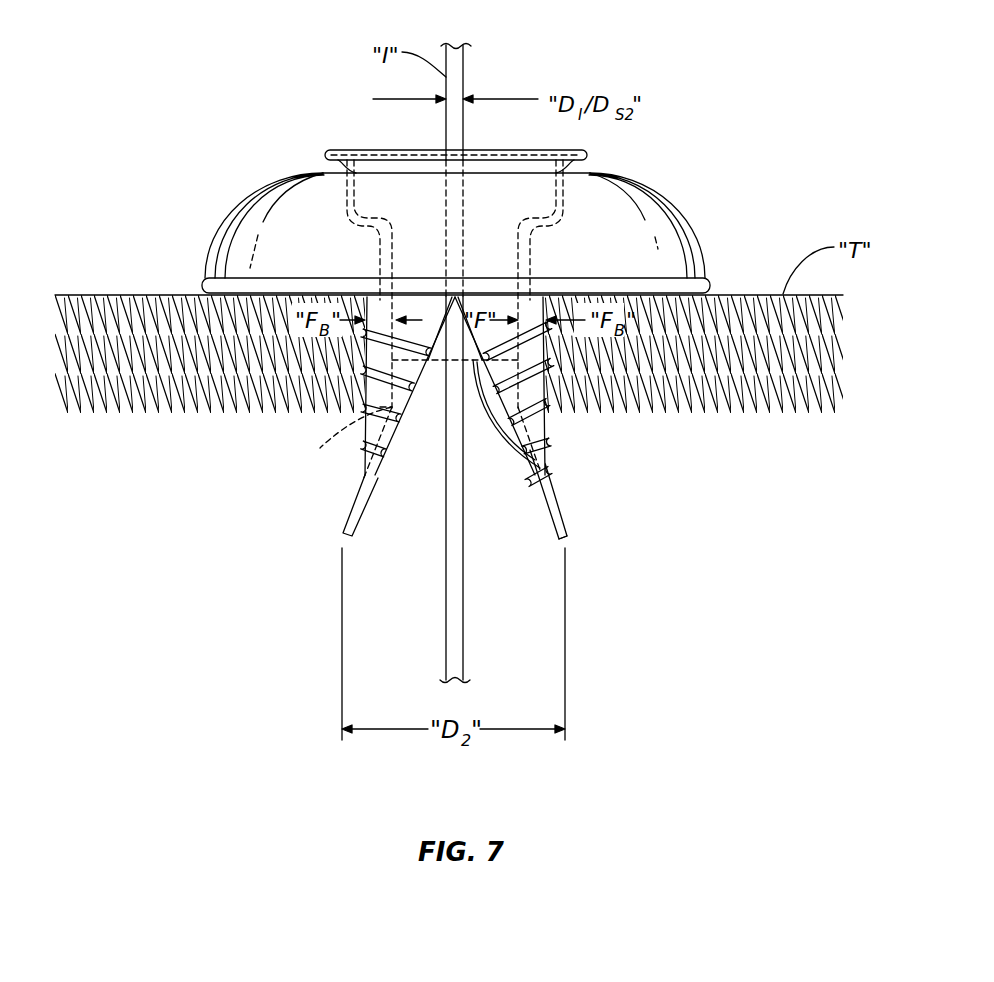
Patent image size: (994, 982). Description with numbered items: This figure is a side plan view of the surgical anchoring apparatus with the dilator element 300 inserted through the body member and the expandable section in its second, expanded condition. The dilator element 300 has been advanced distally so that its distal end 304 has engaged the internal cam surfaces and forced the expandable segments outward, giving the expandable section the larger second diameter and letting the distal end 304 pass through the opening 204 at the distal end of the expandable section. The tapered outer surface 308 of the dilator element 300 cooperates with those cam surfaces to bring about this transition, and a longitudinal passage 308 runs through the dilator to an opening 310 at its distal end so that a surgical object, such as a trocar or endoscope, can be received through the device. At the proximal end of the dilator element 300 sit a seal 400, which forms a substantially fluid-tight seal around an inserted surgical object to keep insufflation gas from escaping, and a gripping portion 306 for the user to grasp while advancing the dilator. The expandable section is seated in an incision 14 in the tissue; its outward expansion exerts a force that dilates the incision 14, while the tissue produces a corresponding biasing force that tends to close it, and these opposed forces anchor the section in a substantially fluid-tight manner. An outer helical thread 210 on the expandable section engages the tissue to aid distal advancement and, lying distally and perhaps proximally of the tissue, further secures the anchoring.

The dilator element 300 is at (302, 66).
The distal end of dilator element 304 is at (441, 591).
The seal 400 is at (373, 153).
The gripping portion 306 is at (565, 167).
The incision 14 is at (368, 298).
The outer helical thread 210 is at (553, 413).
The tapered outer surface / longitudinal passage of dilator element 308 is at (490, 266).
The opening 310 is at (533, 455).
The opening 204 is at (568, 527).